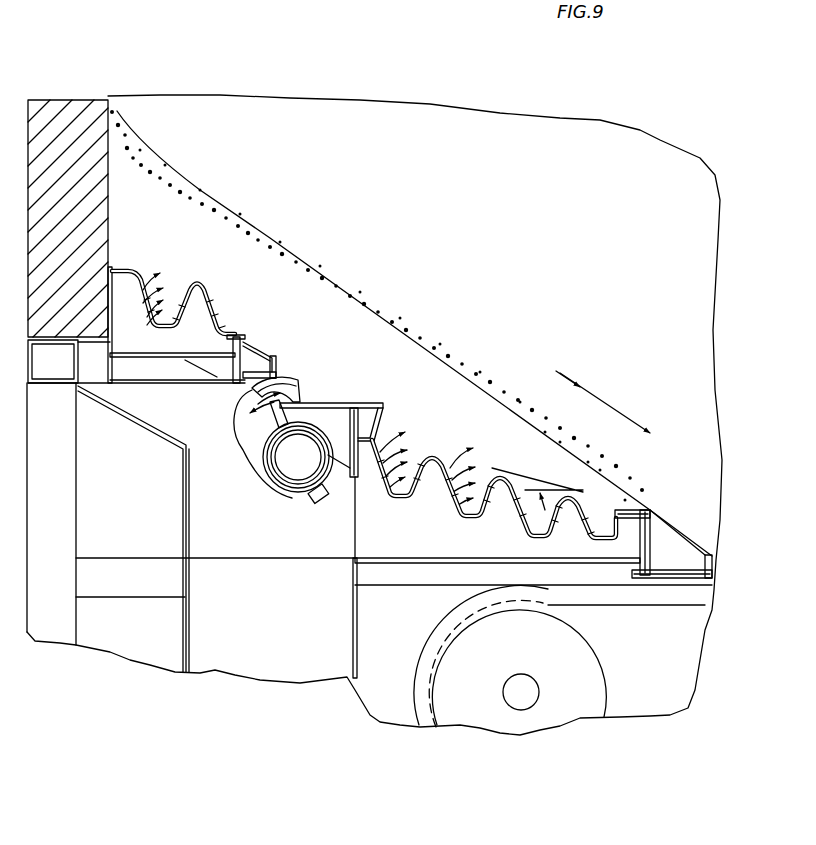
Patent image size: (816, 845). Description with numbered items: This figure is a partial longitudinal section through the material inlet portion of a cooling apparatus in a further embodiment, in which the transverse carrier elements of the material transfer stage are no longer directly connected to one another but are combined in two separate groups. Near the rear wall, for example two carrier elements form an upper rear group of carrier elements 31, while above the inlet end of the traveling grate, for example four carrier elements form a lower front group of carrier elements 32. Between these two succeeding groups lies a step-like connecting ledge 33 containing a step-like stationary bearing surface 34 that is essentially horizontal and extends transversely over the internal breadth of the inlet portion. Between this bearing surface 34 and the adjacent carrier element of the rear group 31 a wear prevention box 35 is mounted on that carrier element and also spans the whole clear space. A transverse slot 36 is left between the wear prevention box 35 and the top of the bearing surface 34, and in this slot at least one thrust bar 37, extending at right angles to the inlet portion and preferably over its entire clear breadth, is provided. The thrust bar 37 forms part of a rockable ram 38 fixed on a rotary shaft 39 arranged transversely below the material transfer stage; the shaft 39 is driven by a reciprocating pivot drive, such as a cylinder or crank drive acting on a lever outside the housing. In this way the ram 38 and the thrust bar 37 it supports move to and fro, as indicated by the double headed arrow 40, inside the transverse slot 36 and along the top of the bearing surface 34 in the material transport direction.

The upper rear group of carrier elements 31 is at (240, 395).
The lower front group of carrier elements 32 is at (610, 565).
The step-like connecting ledge 33 is at (360, 401).
The step-like stationary bearing surface 34 is at (337, 407).
The wear prevention box 35 is at (244, 340).
The transverse slot 36 is at (283, 387).
The thrust bar 37 is at (302, 398).
The rockable ram 38 is at (240, 440).
The rotary shaft 39 is at (303, 478).
The double headed arrow 40 is at (236, 413).